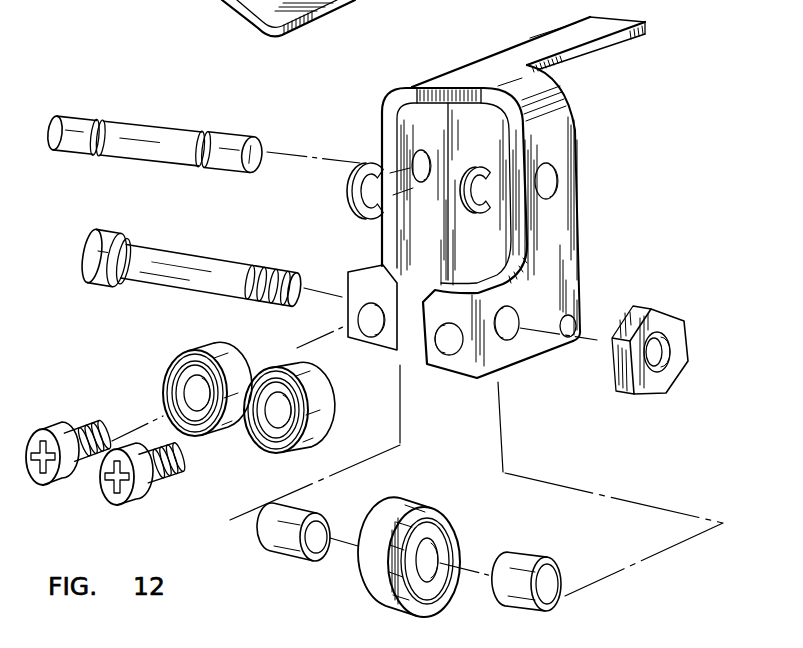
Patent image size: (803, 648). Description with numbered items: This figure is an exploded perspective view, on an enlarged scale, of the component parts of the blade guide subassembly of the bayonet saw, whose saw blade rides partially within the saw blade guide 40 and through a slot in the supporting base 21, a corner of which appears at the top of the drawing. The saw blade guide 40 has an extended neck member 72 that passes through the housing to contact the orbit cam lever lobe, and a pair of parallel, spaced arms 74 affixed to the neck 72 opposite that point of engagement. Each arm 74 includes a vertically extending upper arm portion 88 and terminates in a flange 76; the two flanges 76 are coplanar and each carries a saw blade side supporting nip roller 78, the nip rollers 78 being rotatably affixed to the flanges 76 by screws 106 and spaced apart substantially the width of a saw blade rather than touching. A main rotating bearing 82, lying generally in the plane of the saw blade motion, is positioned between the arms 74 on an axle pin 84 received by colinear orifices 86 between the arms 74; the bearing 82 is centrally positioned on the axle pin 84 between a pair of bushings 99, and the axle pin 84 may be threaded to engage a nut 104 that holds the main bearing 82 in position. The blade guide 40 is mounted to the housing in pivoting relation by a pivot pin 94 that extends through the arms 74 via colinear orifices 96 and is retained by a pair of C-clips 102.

The supporting base 21 is at (204, 0).
The saw blade guide 40 is at (651, 212).
The extended neck member 72 is at (612, 24).
The parallel arms 74 is at (383, 232).
The flange 76 is at (373, 348).
The nip roller 78 is at (253, 433).
The main rotating bearing 82 is at (450, 516).
The axle pin 84 is at (177, 273).
The colinear orifices 86 is at (517, 340).
The upper arm portion 88 is at (383, 120).
The pivot pin 94 is at (155, 133).
The colinear orifices 96 is at (433, 163).
The bushings 99 is at (307, 507).
The C-clips 102 is at (350, 197).
The nut 104 is at (675, 320).
The screws 106 is at (100, 490).